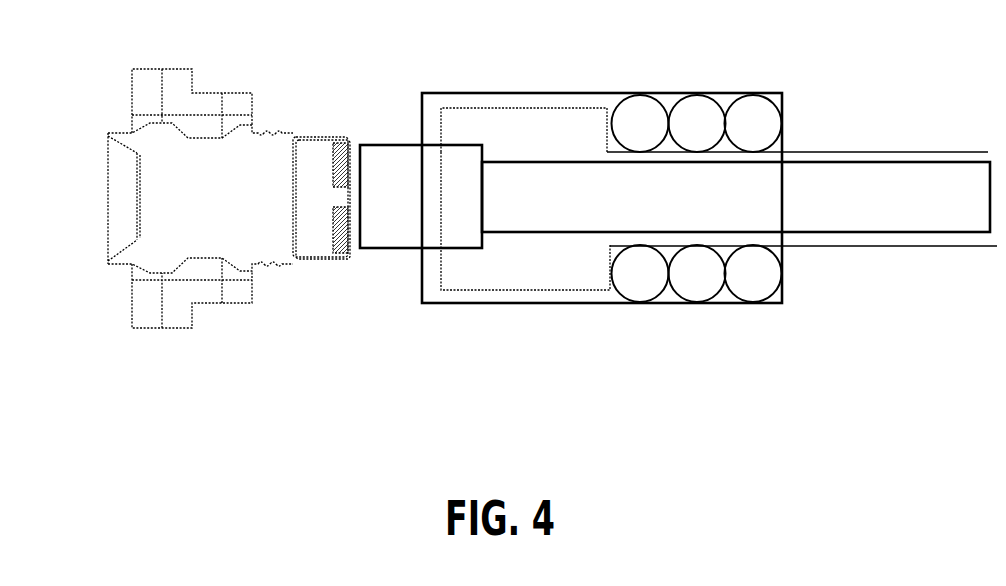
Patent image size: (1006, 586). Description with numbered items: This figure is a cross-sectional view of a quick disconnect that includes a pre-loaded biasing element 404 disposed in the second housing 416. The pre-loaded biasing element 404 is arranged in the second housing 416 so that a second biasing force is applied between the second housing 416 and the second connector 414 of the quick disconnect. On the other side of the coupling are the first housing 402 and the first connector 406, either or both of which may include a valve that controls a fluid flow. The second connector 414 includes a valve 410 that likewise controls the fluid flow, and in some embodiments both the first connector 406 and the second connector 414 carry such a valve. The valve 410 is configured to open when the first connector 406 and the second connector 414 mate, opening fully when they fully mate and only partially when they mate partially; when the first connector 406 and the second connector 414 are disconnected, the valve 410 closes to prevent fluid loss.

The first housing 402 is at (140, 98).
The pre-loaded biasing element 404 is at (695, 287).
The first connector 406 is at (314, 98).
The valve 410 is at (483, 158).
The second connector 414 is at (380, 157).
The second housing 416 is at (450, 303).